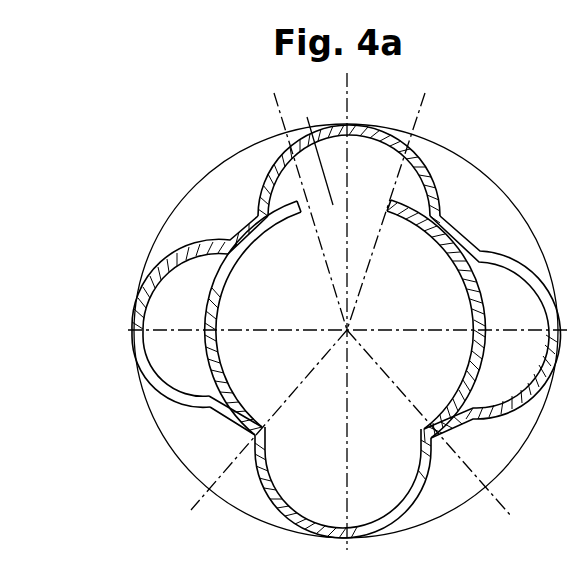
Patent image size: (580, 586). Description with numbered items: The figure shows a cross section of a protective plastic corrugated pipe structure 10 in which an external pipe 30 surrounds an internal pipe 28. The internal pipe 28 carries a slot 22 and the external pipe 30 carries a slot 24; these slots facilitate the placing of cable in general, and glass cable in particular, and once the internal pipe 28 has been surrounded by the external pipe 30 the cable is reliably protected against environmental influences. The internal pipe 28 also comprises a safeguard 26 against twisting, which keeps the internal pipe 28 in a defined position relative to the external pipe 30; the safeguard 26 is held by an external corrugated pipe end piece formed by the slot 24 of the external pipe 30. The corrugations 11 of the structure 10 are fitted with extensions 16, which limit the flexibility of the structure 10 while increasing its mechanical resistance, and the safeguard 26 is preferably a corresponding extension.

The protective pipe structure 10 is at (190, 127).
The corrugations 11 is at (468, 160).
The extensions 16 is at (350, 140).
The slot 22 is at (307, 117).
The slot 24 is at (245, 446).
The safeguard against twisting 26 is at (273, 500).
The internal pipe 28 is at (212, 305).
The external pipe 30 is at (480, 424).